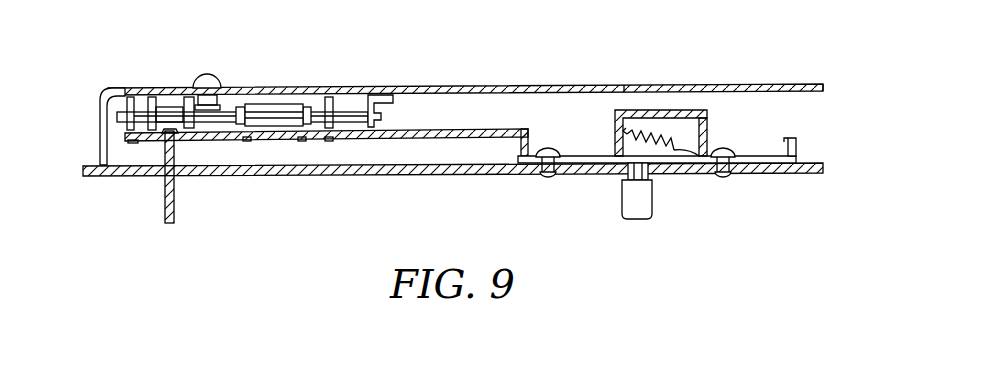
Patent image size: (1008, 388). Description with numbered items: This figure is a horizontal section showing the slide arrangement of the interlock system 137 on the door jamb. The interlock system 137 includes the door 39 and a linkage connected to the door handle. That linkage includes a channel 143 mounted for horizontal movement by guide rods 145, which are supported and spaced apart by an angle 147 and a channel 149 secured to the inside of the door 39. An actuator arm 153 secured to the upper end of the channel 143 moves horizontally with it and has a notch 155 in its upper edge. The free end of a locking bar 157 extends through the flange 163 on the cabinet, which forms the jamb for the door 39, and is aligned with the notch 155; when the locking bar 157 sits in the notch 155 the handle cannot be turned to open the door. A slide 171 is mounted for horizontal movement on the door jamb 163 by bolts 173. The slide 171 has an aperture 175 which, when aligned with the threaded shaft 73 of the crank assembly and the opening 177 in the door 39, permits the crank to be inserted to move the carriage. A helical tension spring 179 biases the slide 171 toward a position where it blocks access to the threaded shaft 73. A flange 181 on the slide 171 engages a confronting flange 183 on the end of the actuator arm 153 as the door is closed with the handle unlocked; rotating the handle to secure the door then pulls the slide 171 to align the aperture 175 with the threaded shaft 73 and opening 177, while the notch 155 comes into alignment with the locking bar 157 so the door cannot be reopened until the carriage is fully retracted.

The interlock system 137 is at (503, 81).
The door 39 is at (812, 84).
The opening 177 is at (632, 84).
The channel 149 is at (110, 107).
The flange 163 is at (814, 174).
The actuator arm 153 is at (388, 141).
The locking bar 157 is at (176, 202).
The notch 155 is at (170, 130).
The guide rods 145 is at (348, 114).
The channel 143 is at (277, 100).
The angle 147 is at (380, 95).
The confronting flange 183 is at (530, 138).
The flange 181 is at (516, 146).
The aperture 175 is at (645, 110).
The slide 171 is at (706, 125).
The helical tension spring 179 is at (666, 152).
The bolts 173 is at (550, 176).
The threaded shaft 73 is at (632, 190).